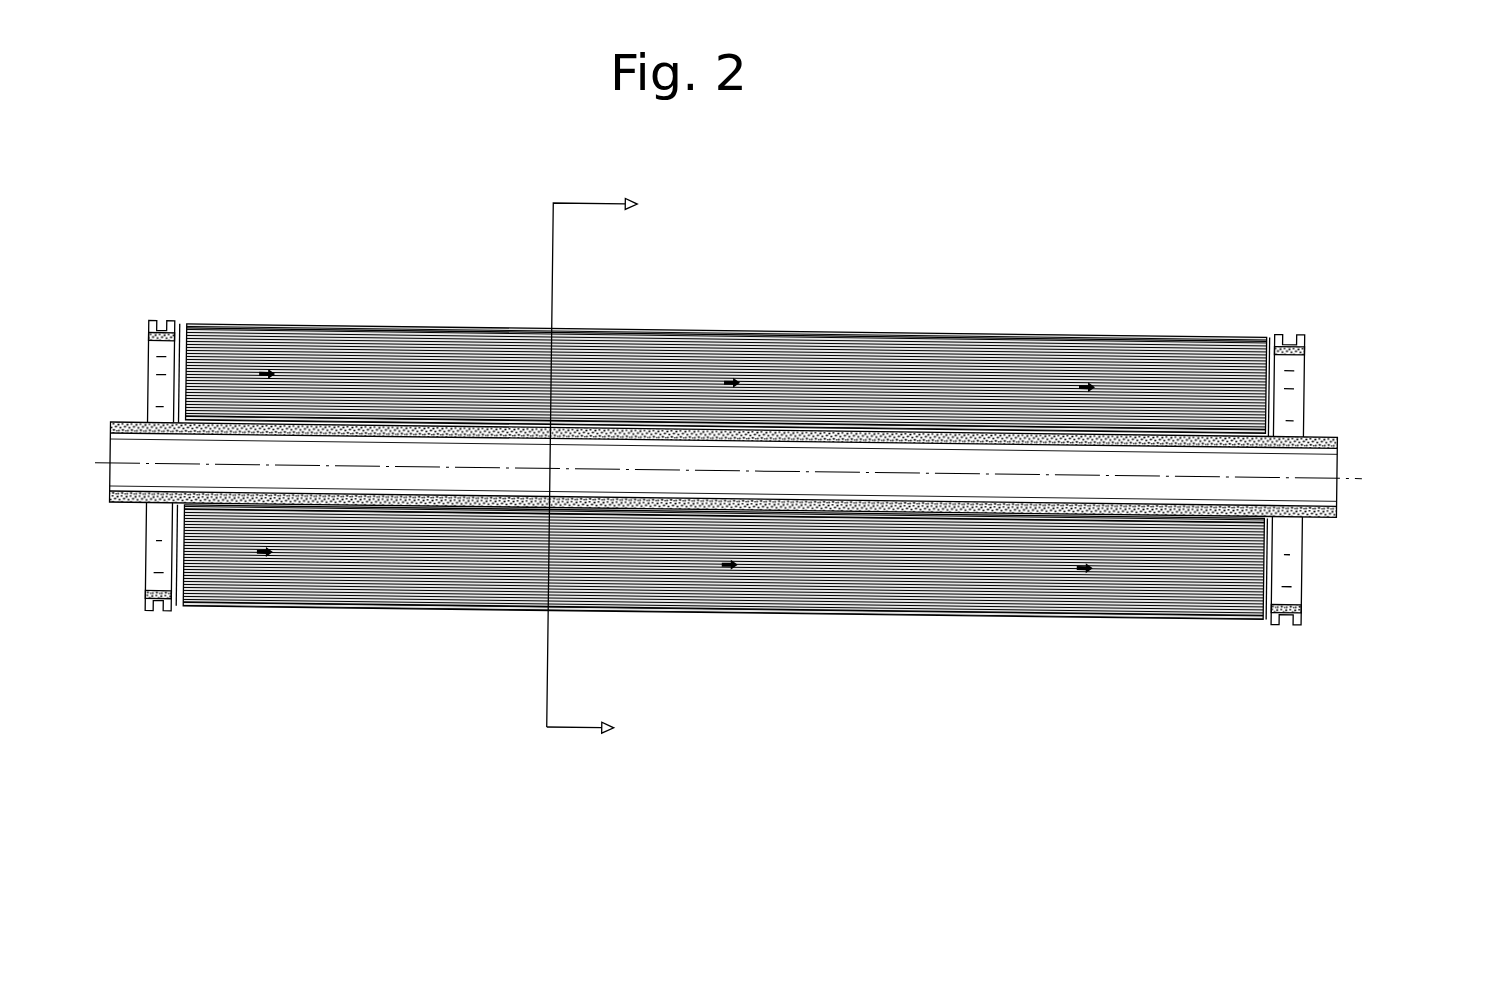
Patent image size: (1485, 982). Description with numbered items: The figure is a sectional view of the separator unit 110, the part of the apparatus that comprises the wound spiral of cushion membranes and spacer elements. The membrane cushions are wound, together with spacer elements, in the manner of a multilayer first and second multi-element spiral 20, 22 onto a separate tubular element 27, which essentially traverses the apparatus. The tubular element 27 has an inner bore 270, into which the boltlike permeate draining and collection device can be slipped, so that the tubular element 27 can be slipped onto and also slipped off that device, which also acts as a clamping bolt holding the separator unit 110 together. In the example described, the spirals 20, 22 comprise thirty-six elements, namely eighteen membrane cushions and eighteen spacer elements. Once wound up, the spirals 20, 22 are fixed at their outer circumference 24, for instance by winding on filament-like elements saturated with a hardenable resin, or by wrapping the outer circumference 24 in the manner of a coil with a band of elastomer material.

The separator unit 110 is at (946, 287).
The outer circumference 24 is at (1065, 322).
The tubular element 27 is at (1312, 437).
The inner bore 270 is at (1302, 464).
The first multi-element spiral 20 is at (723, 621).
The second multi-element spiral 22 is at (973, 614).